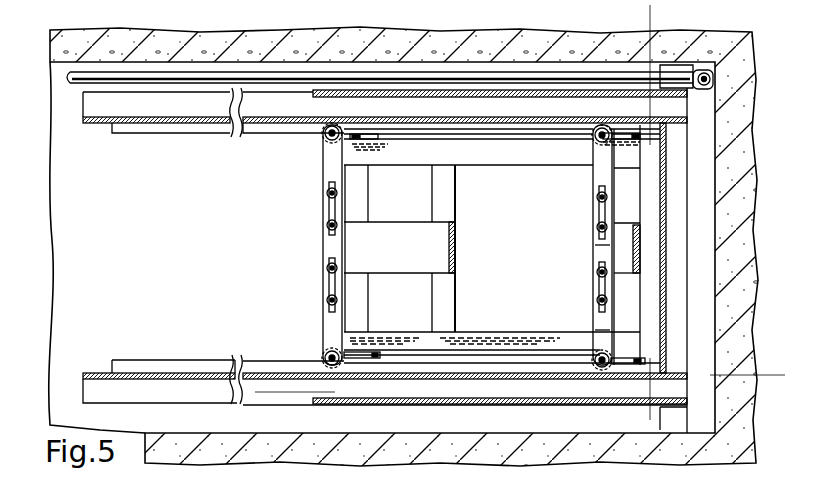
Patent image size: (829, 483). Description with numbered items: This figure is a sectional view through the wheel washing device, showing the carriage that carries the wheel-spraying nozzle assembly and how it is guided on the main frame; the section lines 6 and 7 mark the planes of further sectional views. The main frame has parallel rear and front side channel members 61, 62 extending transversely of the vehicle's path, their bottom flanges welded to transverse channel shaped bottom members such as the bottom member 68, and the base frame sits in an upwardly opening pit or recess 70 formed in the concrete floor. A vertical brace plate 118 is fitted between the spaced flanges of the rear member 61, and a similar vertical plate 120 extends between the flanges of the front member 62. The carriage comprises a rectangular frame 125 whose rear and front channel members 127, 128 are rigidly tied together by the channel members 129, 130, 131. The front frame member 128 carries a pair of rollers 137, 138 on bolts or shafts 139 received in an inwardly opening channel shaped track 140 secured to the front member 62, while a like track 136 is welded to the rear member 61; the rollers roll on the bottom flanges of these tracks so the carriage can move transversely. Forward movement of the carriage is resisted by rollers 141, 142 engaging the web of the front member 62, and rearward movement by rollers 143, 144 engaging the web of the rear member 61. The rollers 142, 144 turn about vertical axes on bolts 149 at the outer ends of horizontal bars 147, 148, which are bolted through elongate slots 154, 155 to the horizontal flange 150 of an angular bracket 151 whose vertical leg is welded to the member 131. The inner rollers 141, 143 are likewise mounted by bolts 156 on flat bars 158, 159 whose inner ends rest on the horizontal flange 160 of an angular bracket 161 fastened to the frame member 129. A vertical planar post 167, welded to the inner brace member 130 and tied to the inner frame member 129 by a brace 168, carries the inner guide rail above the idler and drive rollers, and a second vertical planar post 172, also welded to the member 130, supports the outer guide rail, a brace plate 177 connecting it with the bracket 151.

The section line 6- 6 is at (622, 22).
The section line 7- 7 is at (270, 347).
The rear side channel member 61 is at (100, 373).
The front side channel member 62 is at (238, 115).
The transverse channel shaped bottom member 68 is at (660, 427).
The pit or recess 70 is at (53, 305).
The vertical brace plate 118 is at (467, 407).
The vertical plate 120 is at (500, 96).
The rectangular frame 125 is at (425, 356).
The rear channel member 127 is at (496, 325).
The front channel member 128 is at (510, 162).
The channel member 129 is at (357, 318).
The channel member 130 is at (456, 309).
The channel member 131 is at (633, 183).
The channel shaped track 136 is at (142, 360).
The roller 137 is at (370, 138).
The roller 138 is at (642, 124).
The bolts or shafts 139 is at (676, 120).
The channel shaped track 140 is at (257, 130).
The roller 141 is at (323, 124).
The roller 142 is at (588, 140).
The roller 143 is at (320, 354).
The roller 144 is at (385, 385).
The horizontal bar 147 is at (597, 174).
The horizontal bar 148 is at (598, 324).
The bolts 149 is at (603, 126).
The horizontal flange 150 is at (598, 248).
The angular bracket 151 is at (615, 232).
The elongate slot 154 is at (598, 204).
The elongate slot 155 is at (602, 280).
The bolts 156 is at (323, 134).
The flat bar 158 is at (322, 157).
The flat bar 159 is at (326, 322).
The horizontal flange 160 is at (324, 246).
The angular bracket 161 is at (344, 245).
The vertical planar post 167 is at (457, 250).
The brace 168 is at (433, 235).
The vertical planar post 172 is at (641, 242).
The brace plate 177 is at (623, 268).